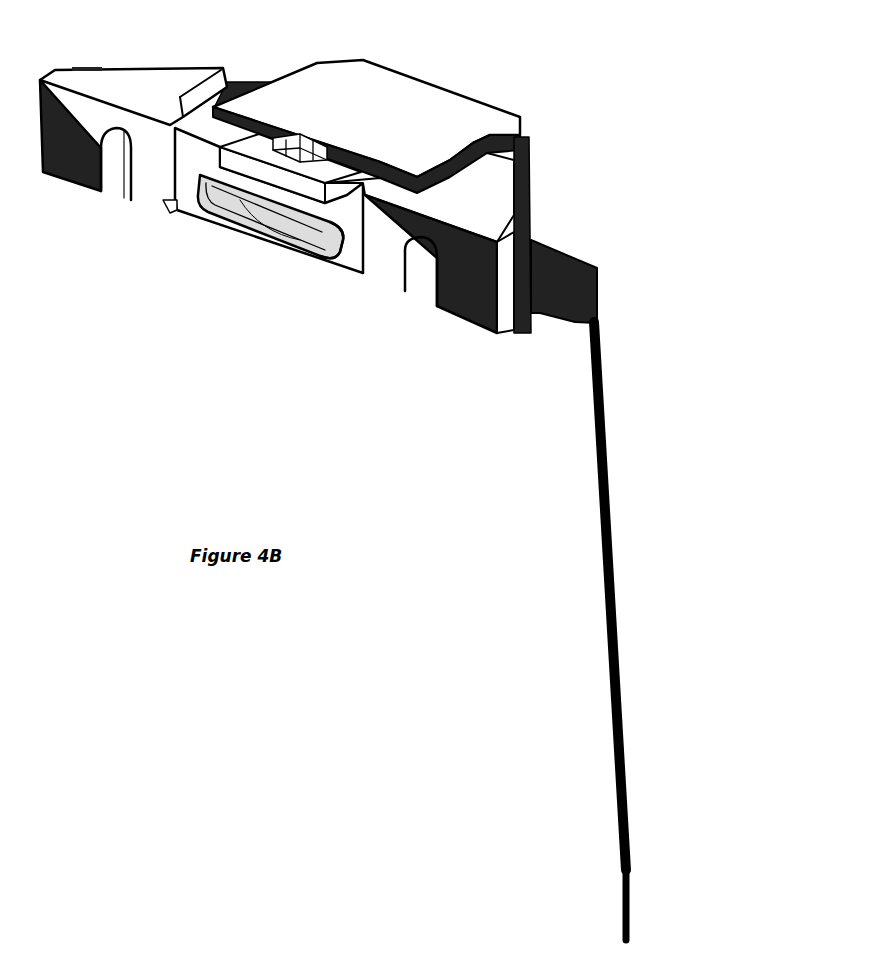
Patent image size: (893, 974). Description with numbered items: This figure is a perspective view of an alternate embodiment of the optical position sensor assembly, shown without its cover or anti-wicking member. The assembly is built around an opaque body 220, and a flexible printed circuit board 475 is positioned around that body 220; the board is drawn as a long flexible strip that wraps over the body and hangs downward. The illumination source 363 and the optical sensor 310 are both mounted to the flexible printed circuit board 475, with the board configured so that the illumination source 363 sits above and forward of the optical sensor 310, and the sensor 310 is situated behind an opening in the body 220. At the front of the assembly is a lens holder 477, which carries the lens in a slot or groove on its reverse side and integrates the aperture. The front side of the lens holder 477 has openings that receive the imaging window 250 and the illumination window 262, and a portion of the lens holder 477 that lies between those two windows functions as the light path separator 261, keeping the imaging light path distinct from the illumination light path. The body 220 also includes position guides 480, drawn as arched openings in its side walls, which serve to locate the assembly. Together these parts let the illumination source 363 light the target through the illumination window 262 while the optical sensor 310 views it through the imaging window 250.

The optical sensor 310 is at (626, 93).
The opaque body 220 is at (353, 73).
The illumination window 262 is at (332, 163).
The illumination source 363 is at (283, 137).
The light path separator 261 is at (217, 165).
The imaging window 250 is at (273, 227).
The lens holder 477 is at (343, 257).
The position guides 480 is at (113, 191).
The flexible printed circuit board 475 is at (602, 355).